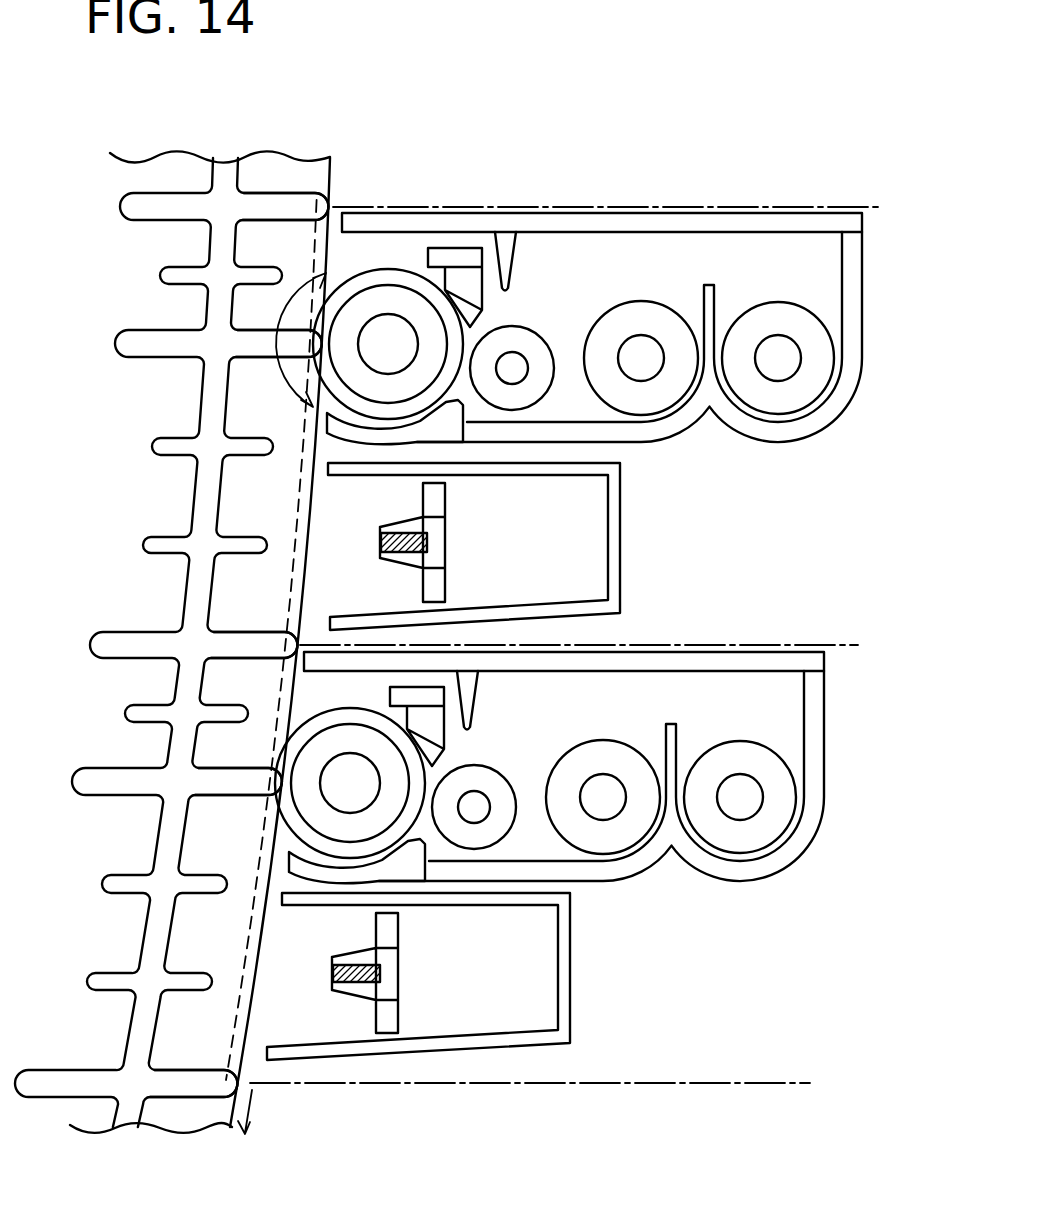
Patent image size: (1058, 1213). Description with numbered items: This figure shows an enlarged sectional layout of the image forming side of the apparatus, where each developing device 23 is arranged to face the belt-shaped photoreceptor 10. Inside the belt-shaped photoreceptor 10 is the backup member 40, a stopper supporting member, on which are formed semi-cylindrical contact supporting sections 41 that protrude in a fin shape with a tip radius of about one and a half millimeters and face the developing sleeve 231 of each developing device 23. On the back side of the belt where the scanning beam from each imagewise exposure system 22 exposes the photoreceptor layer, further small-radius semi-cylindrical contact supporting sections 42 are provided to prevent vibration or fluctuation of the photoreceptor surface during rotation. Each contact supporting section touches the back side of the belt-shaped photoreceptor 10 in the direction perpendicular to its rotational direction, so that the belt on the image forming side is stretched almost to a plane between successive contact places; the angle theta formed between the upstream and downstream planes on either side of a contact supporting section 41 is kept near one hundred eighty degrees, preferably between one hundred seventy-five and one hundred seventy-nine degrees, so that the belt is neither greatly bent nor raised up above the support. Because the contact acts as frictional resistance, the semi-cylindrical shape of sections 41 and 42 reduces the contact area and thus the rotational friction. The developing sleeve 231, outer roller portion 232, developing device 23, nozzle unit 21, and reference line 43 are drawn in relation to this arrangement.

The belt-shaped photoreceptor 10 is at (333, 165).
The nozzle unit 21 is at (428, 543).
The imagewise exposure system 22 is at (718, 207).
The developing device 23 is at (656, 249).
The developing sleeve 231 is at (437, 340).
The roller outer ring 232 is at (417, 270).
The backup member 40 is at (165, 642).
The contact supporting section 41 is at (318, 343).
The contact supporting section 42 is at (333, 195).
The reference plane 43 is at (300, 452).